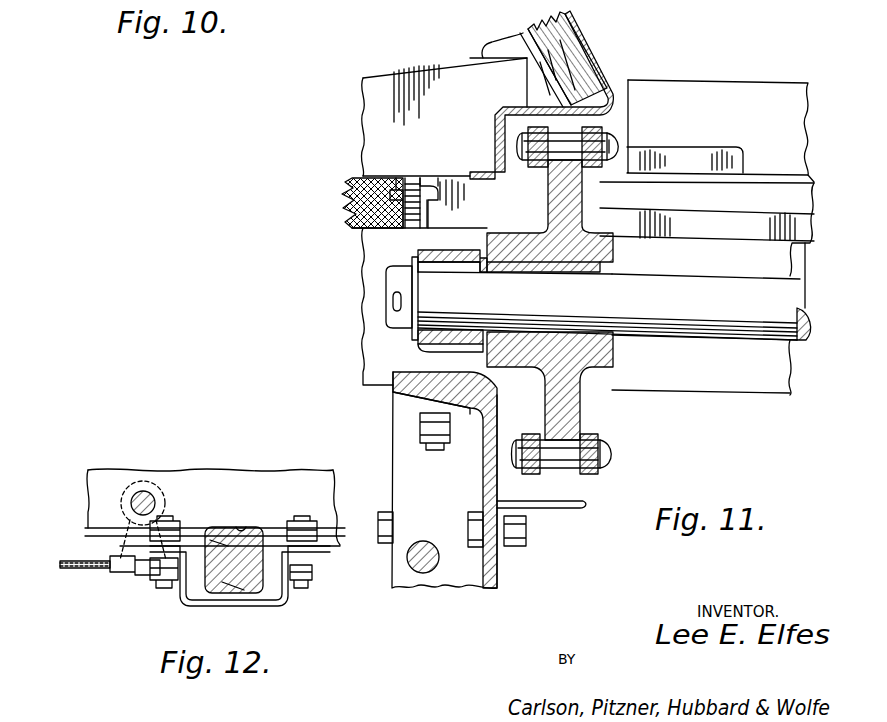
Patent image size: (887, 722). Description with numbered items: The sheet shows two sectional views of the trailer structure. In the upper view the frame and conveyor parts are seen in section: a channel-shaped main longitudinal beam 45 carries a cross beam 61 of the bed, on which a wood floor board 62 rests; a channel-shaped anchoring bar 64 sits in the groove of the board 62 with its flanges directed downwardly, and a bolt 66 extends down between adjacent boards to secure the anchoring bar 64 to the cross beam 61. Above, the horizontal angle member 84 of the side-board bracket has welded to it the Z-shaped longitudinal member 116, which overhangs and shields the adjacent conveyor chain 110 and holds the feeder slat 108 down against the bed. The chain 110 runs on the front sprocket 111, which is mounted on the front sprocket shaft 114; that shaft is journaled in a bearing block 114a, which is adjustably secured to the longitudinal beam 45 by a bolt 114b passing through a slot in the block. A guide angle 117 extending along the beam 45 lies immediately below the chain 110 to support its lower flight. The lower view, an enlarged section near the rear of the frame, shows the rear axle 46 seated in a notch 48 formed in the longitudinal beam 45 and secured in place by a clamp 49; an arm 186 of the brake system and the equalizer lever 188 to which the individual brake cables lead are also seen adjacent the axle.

In FIG. 11, the horizontal angle member 84 is at (364, 128).
In FIG. 11, the anchoring bar 64 is at (396, 178).
In FIG. 11, the bolt 66 is at (437, 178).
In FIG. 11, the floor board 62 is at (350, 222).
In FIG. 11, the cross beam 61 is at (370, 318).
In FIG. 11, the longitudinal member 116 is at (498, 128).
In FIG. 11, the conveyor chain 110 is at (623, 124).
In FIG. 11, the feeder slat 108 is at (700, 98).
In FIG. 11, the bearing block 114a is at (459, 248).
In FIG. 11, the front sprocket shaft 114 is at (722, 330).
In FIG. 11, the front sprocket 111 is at (576, 408).
In FIG. 11, the bolt 114b is at (420, 428).
In FIG. 11, the longitudinal beam 45 is at (486, 484).
In FIG. 12, the longitudinal beam 45 is at (212, 486).
In FIG. 11, the guide angle 117 is at (545, 508).
In FIG. 12, the notch 48 is at (244, 530).
In FIG. 12, the clamp 49 is at (270, 598).
In FIG. 12, the rear axle 46 is at (226, 590).
In FIG. 12, the arm 186 is at (135, 572).
In FIG. 12, the equalizer lever 188 is at (66, 568).